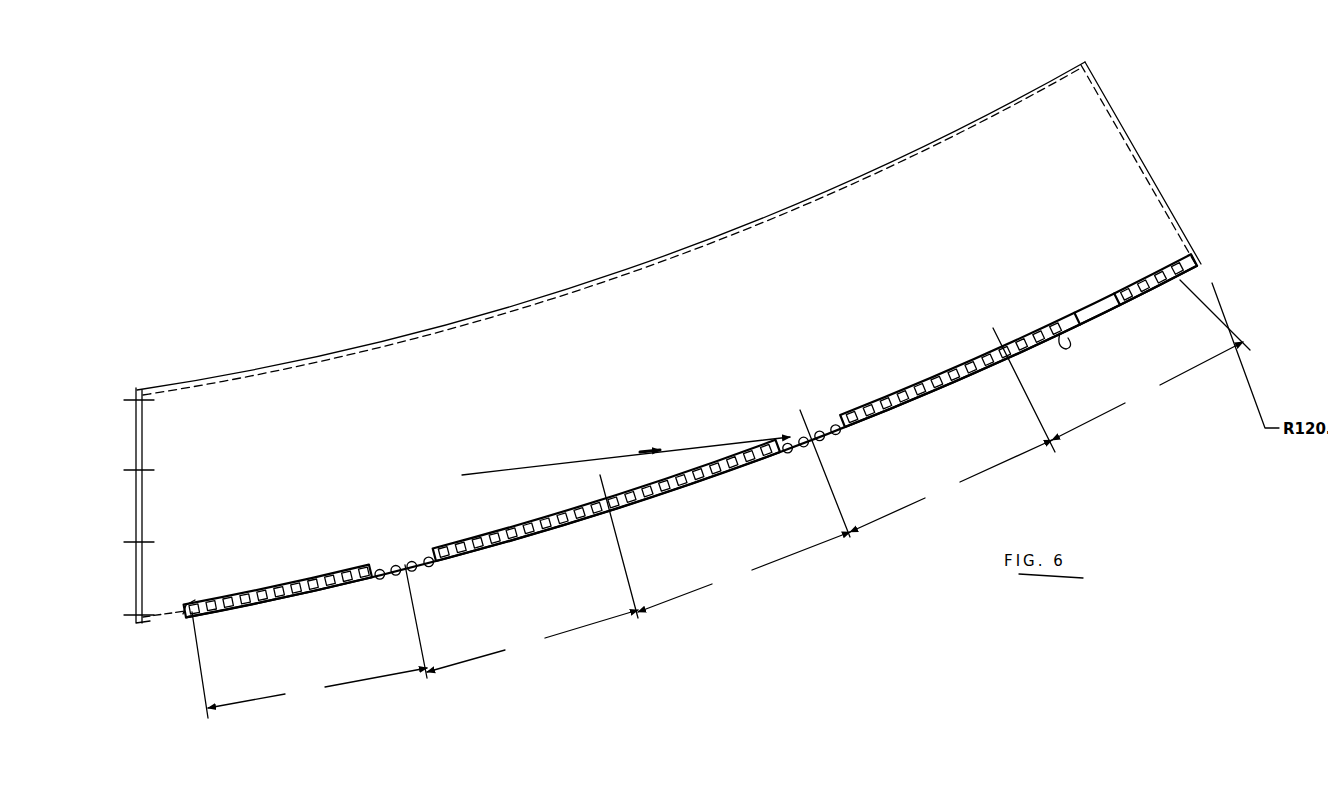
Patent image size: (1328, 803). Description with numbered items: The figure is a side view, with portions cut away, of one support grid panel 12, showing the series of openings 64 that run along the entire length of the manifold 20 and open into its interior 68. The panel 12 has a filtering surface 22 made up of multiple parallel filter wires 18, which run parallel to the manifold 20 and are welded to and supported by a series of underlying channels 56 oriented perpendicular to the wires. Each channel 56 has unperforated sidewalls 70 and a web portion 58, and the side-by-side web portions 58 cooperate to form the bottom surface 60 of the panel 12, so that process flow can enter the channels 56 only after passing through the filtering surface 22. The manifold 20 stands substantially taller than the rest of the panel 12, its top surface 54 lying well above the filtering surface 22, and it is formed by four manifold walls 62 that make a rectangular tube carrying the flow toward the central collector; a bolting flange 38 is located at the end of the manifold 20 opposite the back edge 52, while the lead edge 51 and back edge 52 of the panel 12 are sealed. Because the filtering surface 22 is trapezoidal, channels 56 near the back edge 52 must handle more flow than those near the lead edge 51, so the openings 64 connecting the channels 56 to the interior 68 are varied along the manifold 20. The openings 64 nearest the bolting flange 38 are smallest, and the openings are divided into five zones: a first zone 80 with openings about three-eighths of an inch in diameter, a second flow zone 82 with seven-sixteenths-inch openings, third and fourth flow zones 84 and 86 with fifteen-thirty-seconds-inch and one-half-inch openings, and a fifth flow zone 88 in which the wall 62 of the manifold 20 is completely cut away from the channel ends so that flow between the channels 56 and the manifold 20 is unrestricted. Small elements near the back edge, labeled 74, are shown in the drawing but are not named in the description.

The support grid panel 12 is at (403, 253).
The filter wires 18 is at (1172, 256).
The manifold 20 is at (990, 104).
The filtering surface 22 is at (885, 394).
The bolting flange 38 is at (136, 430).
The lead edge 51 is at (180, 613).
The back edge 52 is at (1180, 266).
The top surface 54 is at (640, 262).
The channels 56 is at (565, 528).
The web portion 58 is at (740, 474).
The bottom surface 60 is at (928, 396).
The manifold walls 62 is at (806, 192).
The openings 64 is at (382, 569).
The interior 68 is at (646, 388).
The sidewalls 70 is at (1068, 348).
The end links 74 is at (1126, 290).
The first zone 80 is at (309, 641).
The second flow zone 82 is at (532, 573).
The third flow zone 84 is at (744, 511).
The fourth flow zone 86 is at (952, 430).
The fifth flow zone 88 is at (1151, 360).